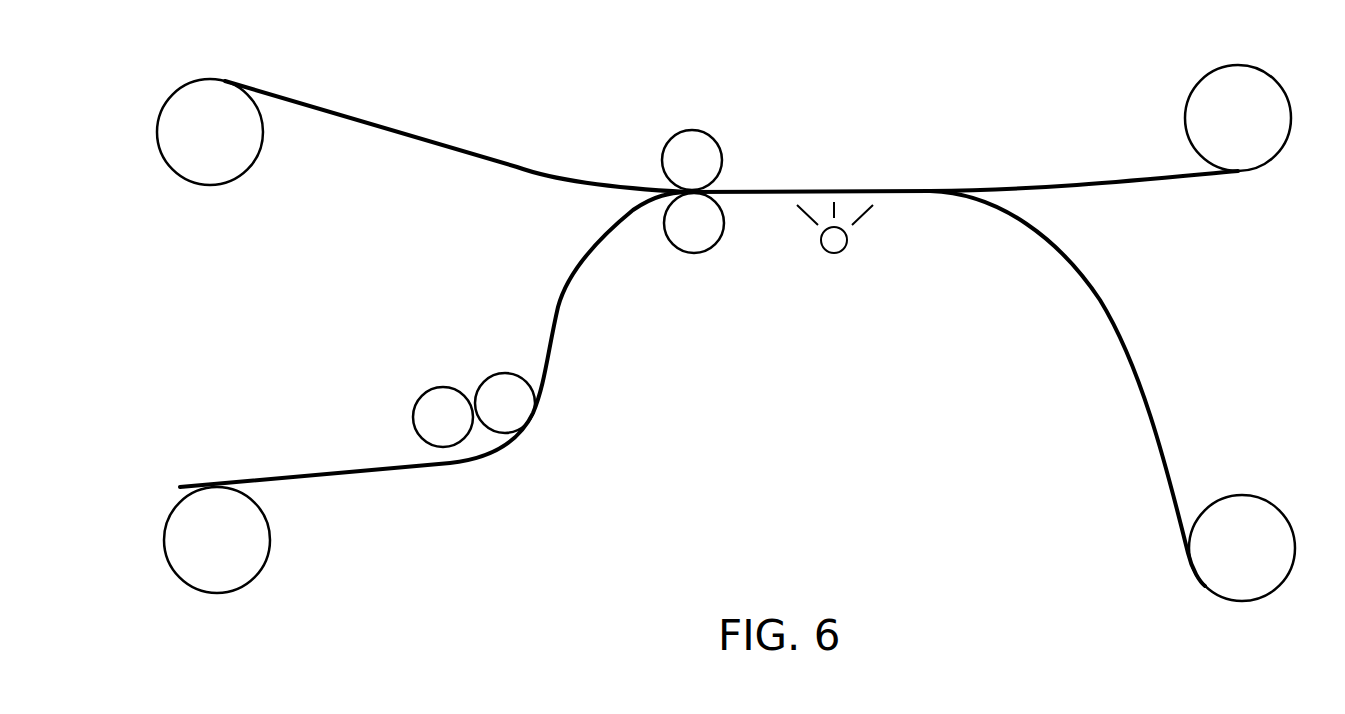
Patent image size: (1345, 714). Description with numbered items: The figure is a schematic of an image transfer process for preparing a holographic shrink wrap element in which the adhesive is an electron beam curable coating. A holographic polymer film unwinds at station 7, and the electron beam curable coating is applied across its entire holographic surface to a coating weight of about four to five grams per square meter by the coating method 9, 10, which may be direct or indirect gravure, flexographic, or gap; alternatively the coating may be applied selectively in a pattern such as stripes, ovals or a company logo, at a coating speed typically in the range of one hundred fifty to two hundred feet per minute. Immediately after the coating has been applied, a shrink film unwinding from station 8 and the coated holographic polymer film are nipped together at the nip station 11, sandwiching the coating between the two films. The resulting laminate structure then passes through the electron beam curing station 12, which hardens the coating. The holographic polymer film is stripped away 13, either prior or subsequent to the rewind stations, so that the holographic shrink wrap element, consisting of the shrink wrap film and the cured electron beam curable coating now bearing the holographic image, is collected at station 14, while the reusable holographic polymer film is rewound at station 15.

The unwinding station 7 is at (148, 516).
The unwinding station 8 is at (155, 100).
The coating method 9 is at (397, 388).
The coating method 10 is at (542, 441).
The nip station 11 is at (697, 116).
The electron beam curing station 12 is at (836, 268).
The stripping away 13 is at (989, 179).
The rewind station 14 is at (1271, 178).
The rewind station 15 is at (1142, 565).